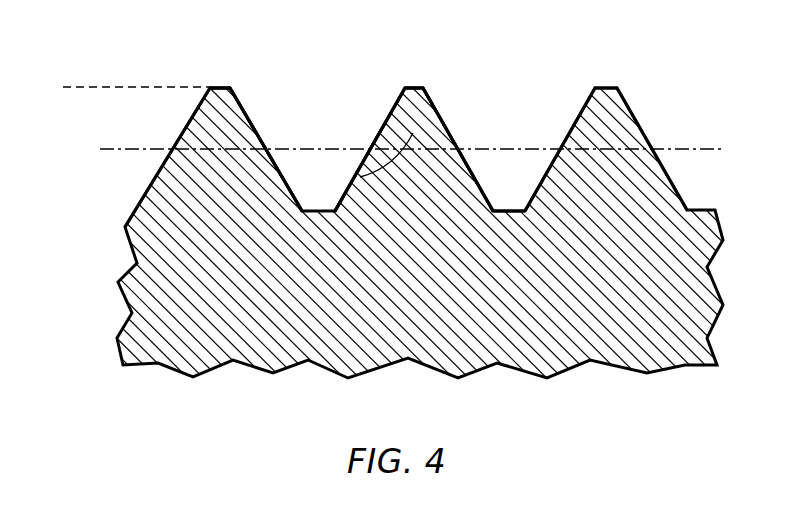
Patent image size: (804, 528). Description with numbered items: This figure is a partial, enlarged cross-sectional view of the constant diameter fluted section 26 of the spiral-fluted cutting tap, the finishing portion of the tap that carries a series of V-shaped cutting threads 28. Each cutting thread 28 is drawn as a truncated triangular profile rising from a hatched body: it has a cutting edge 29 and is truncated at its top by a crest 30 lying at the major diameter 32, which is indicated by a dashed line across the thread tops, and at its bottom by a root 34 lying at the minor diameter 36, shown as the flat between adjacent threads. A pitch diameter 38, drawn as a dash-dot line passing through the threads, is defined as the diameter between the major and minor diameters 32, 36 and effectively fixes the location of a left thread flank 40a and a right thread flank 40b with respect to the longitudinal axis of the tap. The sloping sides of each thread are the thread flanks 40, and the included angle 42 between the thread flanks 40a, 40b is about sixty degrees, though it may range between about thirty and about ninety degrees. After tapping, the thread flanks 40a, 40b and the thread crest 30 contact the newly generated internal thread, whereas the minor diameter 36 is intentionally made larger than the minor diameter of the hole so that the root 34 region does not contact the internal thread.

The constant diameter fluted section 26 is at (534, 52).
The cutting threads 28 is at (253, 117).
The cutting edge 29 is at (220, 87).
The crest 30 is at (408, 87).
The major diameter 32 is at (82, 93).
The root 34 is at (521, 214).
The minor diameter 36 is at (490, 210).
The pitch diameter 38 is at (118, 156).
The thread flank 40 is at (247, 103).
The left thread flank 40a is at (484, 183).
The right thread flank 40b is at (443, 131).
The included angle 42 is at (360, 177).